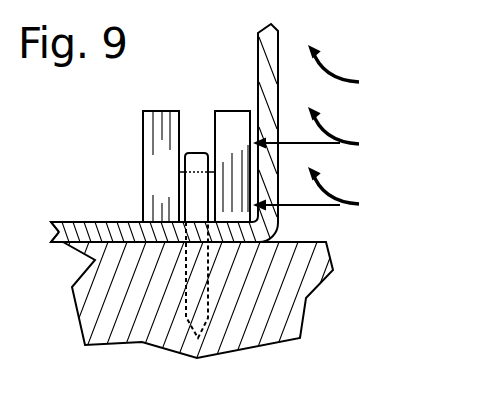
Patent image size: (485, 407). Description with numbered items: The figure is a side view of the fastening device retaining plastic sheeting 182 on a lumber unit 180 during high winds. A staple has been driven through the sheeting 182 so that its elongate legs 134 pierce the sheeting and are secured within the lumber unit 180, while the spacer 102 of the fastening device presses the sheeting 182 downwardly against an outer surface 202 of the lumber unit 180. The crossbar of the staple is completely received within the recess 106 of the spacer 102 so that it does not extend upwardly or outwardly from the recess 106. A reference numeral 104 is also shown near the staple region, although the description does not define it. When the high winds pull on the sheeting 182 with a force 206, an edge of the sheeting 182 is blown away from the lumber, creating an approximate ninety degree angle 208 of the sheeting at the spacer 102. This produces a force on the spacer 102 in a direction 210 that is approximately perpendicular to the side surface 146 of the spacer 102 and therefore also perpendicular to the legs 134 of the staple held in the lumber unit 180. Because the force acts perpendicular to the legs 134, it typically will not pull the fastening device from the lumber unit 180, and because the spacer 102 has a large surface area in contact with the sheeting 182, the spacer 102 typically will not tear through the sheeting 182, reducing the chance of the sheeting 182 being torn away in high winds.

The spacer 102 is at (155, 110).
The pin 104 is at (202, 153).
The recess 106 is at (215, 120).
The legs of the staple 134 is at (185, 312).
The side surface 146 is at (261, 138).
The lumber unit 180 is at (280, 306).
The plastic sheeting 182 is at (60, 243).
The outer surface 202 is at (107, 222).
The force 206 is at (333, 132).
The angle 208 is at (228, 216).
The direction 210 is at (307, 144).